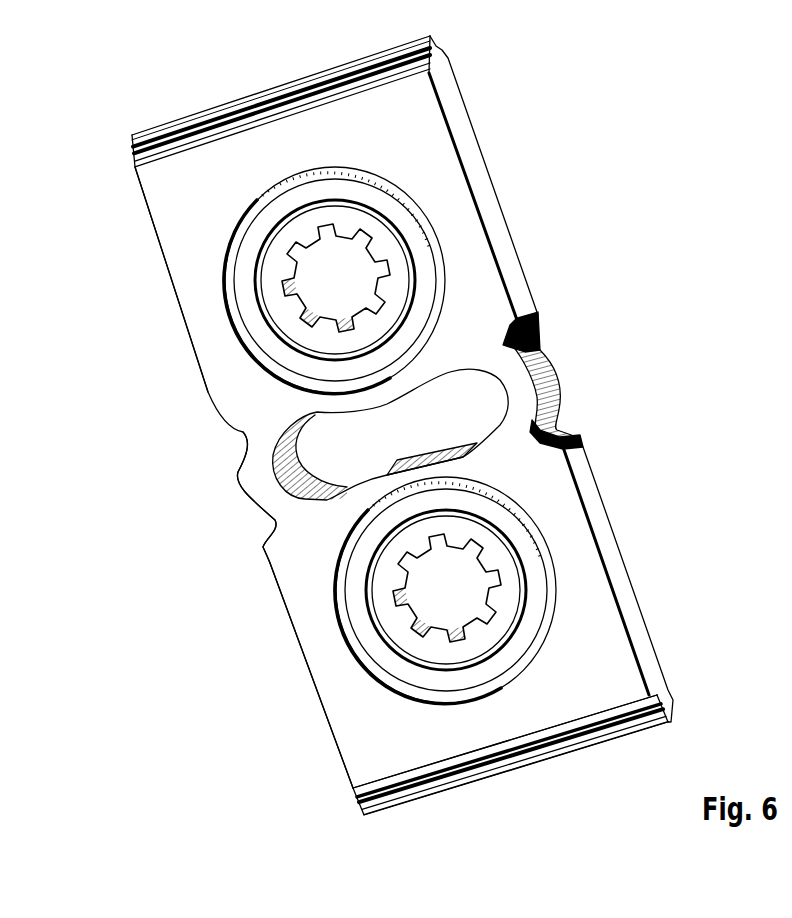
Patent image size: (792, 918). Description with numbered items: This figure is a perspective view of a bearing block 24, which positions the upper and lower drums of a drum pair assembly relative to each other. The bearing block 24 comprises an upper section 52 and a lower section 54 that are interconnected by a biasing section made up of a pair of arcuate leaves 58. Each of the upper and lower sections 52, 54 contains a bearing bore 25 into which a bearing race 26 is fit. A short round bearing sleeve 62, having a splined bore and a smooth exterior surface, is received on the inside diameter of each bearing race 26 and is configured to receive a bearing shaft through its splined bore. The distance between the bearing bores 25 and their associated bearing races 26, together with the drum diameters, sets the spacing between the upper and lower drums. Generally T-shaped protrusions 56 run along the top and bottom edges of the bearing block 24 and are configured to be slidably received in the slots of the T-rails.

The bearing block 24 is at (600, 129).
The bearing bore 25 is at (262, 185).
The bearing race 26 is at (425, 297).
The upper section 52 is at (197, 303).
The lower section 54 is at (305, 622).
The T-shaped protrusions 56 is at (262, 92).
The arcuate leaves 58 is at (255, 477).
The bearing sleeve 62 is at (290, 268).